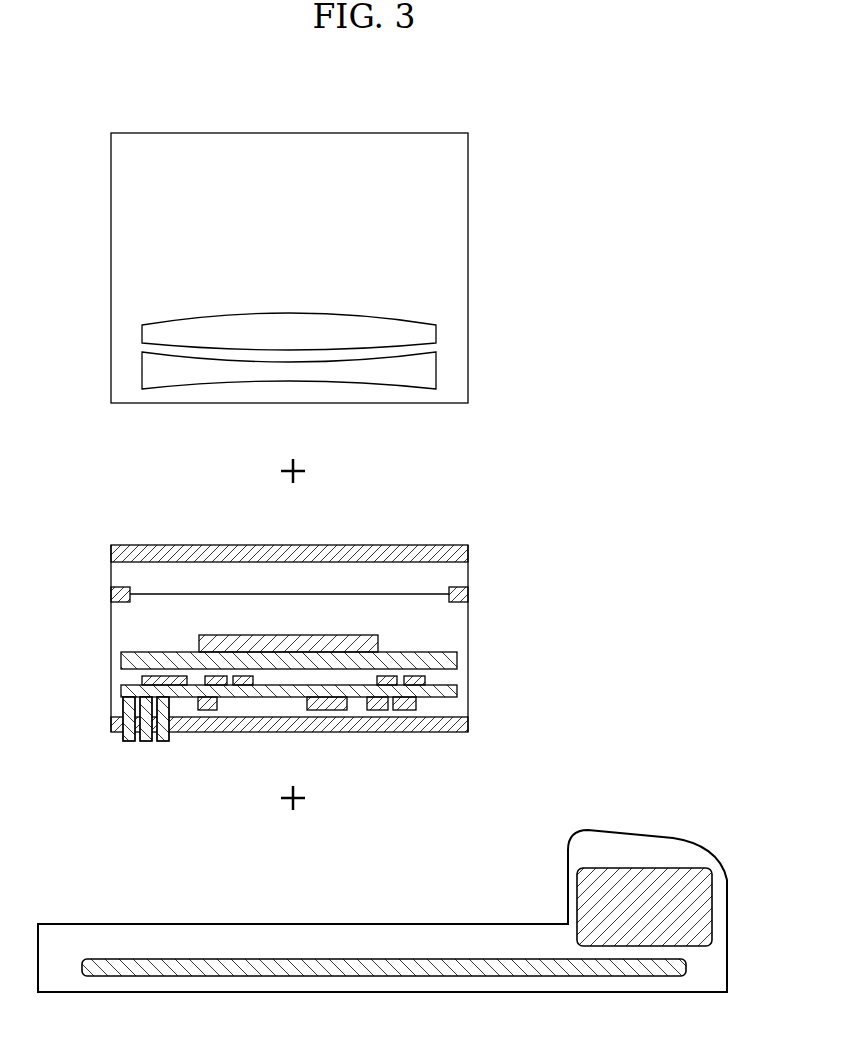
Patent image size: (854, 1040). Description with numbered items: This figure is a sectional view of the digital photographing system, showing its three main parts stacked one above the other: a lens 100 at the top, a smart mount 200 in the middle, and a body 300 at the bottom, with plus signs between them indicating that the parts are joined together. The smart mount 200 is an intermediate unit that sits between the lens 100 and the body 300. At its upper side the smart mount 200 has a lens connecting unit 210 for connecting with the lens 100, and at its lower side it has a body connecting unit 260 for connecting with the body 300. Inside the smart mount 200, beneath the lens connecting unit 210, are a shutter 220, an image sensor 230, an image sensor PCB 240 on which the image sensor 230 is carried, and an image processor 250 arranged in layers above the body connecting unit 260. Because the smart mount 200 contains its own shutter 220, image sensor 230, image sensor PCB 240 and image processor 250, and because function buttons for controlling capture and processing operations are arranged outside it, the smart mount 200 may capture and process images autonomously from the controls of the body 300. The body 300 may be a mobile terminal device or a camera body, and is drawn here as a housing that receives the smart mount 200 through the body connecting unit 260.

The lens 100 is at (468, 270).
The smart mount 200 is at (468, 627).
The lens connecting unit 210 is at (116, 552).
The shutter 220 is at (112, 594).
The image sensor 230 is at (212, 643).
The image sensor PCB 240 is at (135, 662).
The image processor 250 is at (135, 692).
The body connecting unit 260 is at (125, 727).
The body 300 is at (727, 923).